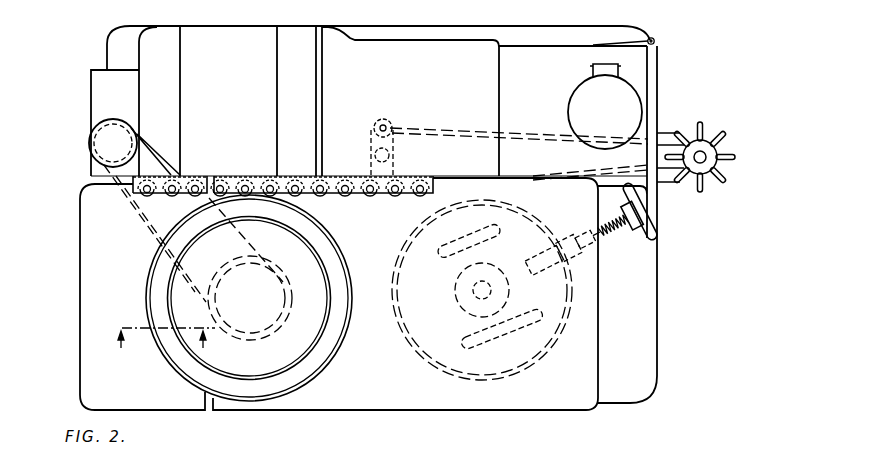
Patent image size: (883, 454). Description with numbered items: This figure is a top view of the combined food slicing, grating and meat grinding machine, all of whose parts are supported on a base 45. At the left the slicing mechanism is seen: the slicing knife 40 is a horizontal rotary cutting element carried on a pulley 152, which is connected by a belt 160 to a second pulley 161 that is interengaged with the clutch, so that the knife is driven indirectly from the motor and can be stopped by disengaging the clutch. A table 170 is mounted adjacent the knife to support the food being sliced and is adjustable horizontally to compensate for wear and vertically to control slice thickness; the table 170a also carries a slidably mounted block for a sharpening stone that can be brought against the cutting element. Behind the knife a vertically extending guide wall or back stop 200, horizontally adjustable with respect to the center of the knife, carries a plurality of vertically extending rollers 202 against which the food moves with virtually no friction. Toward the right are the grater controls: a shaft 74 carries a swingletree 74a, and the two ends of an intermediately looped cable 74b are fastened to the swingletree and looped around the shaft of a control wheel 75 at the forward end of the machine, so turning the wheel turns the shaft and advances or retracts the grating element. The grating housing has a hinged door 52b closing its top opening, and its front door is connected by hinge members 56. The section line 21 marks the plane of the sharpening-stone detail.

The section line 21 is at (159, 329).
The slicing knife 40 is at (300, 350).
The base 45 is at (644, 381).
The hinged door 52b is at (633, 115).
The hinge members 56 is at (657, 36).
The shaft 74 is at (371, 141).
The swingletree 74a is at (392, 118).
The cable 74b is at (467, 132).
The control wheel 75 is at (703, 143).
The pulley 152 is at (254, 330).
The belt 160 is at (95, 182).
The second pulley 161 is at (101, 148).
The table 170 is at (547, 402).
The table 170a is at (90, 355).
The guide wall 200 is at (477, 166).
The rollers 202 is at (395, 197).